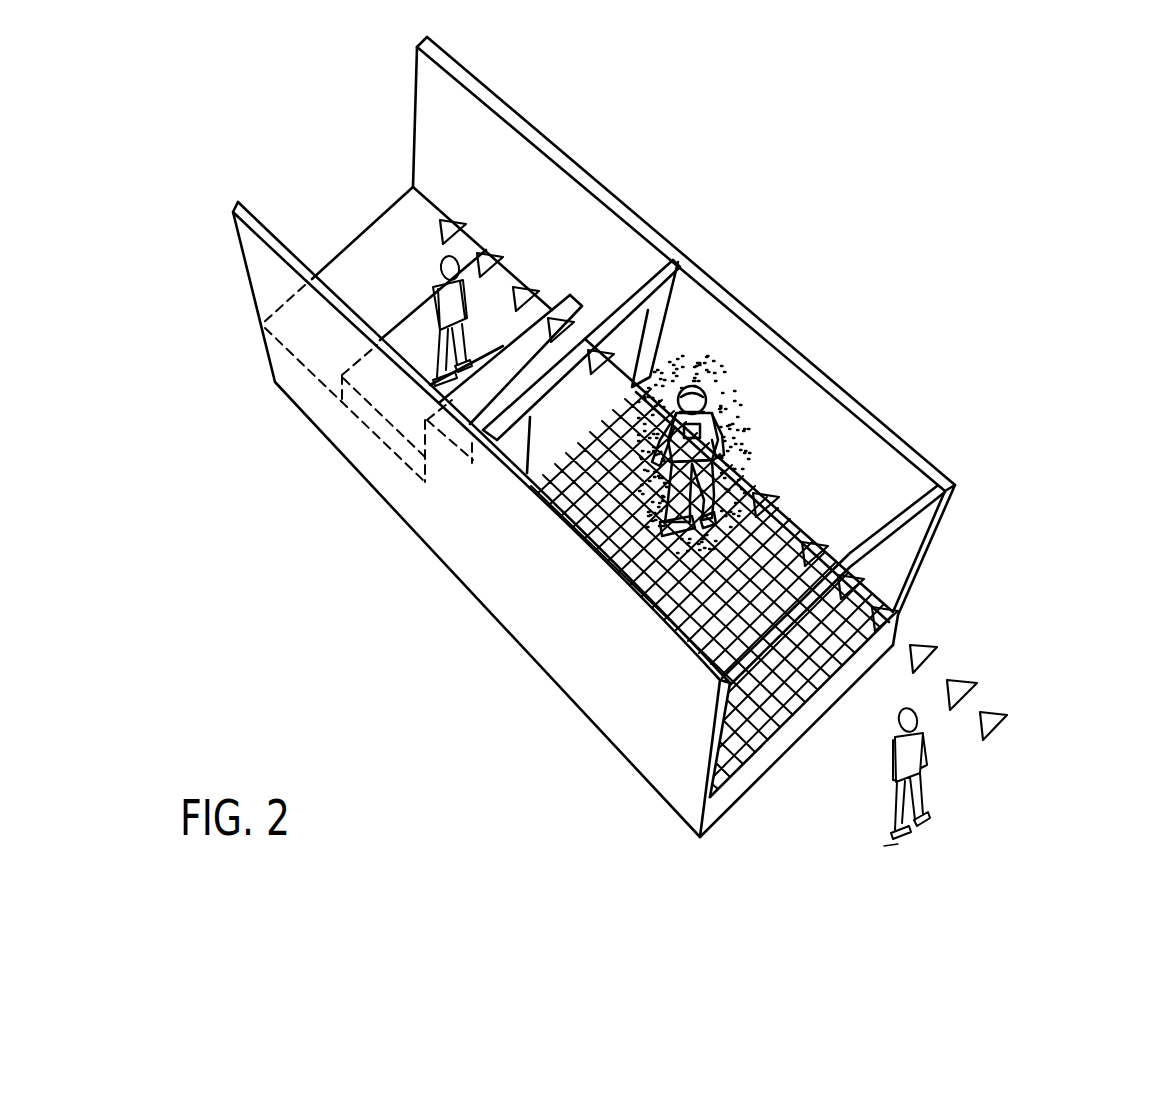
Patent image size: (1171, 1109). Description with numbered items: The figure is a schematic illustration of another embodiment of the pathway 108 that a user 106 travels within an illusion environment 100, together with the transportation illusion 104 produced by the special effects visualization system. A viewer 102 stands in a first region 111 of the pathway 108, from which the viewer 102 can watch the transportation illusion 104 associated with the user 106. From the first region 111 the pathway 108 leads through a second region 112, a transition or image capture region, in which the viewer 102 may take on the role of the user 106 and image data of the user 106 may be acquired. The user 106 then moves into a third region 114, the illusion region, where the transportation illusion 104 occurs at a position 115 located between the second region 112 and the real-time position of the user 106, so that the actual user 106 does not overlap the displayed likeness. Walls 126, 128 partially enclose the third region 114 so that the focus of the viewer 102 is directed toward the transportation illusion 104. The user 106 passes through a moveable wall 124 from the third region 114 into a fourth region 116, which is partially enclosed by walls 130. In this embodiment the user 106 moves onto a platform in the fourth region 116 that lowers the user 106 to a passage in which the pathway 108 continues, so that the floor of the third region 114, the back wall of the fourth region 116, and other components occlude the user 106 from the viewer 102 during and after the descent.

The illusion environment 100 is at (692, 465).
The viewer 102 is at (926, 748).
The transportation illusion 104 is at (750, 402).
The user 106 is at (442, 293).
The pathway 108 is at (960, 677).
The first region 111 is at (891, 845).
The second region 112 is at (786, 733).
The third region 114 is at (769, 618).
The position 115 is at (731, 637).
The fourth region 116 is at (540, 222).
The moveable wall 124 is at (636, 340).
The wall 126 is at (758, 320).
The wall 128 is at (597, 548).
The walls 130 is at (603, 185).